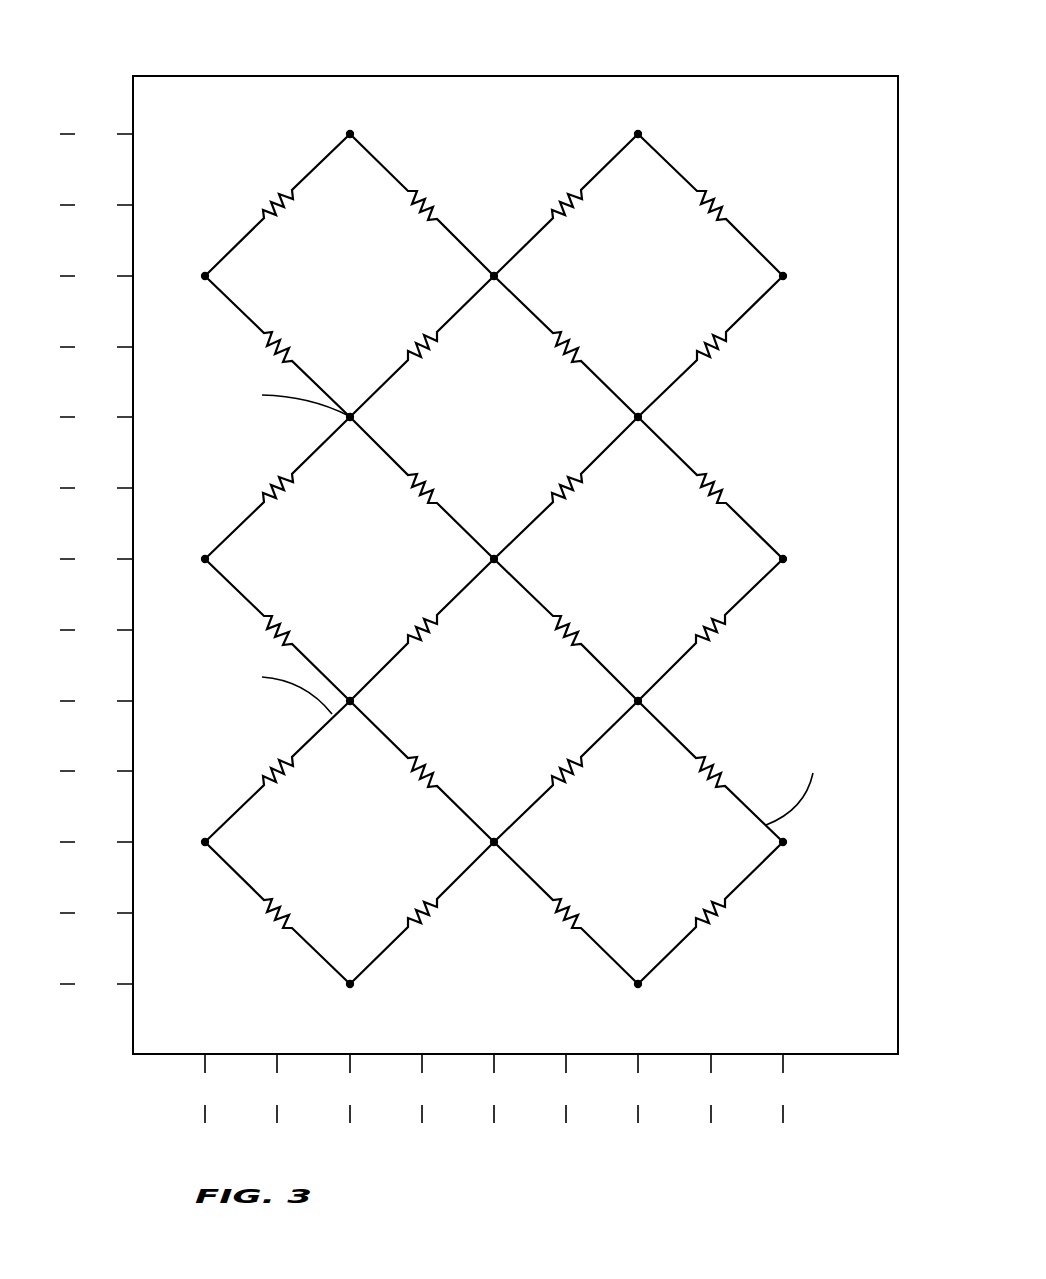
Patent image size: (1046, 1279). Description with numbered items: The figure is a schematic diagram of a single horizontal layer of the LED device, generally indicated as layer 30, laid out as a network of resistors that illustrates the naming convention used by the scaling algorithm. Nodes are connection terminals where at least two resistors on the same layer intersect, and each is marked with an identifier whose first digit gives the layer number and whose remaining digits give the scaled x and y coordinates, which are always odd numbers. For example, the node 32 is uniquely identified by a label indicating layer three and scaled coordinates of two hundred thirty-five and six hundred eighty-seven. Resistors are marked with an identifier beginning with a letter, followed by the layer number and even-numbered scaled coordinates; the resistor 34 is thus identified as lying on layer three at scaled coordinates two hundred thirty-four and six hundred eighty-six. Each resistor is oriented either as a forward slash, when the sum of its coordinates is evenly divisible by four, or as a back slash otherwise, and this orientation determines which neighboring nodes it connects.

The horizontal layer of the LED device 30 is at (372, 60).
The node 32 is at (350, 133).
The resistor 34 is at (286, 206).